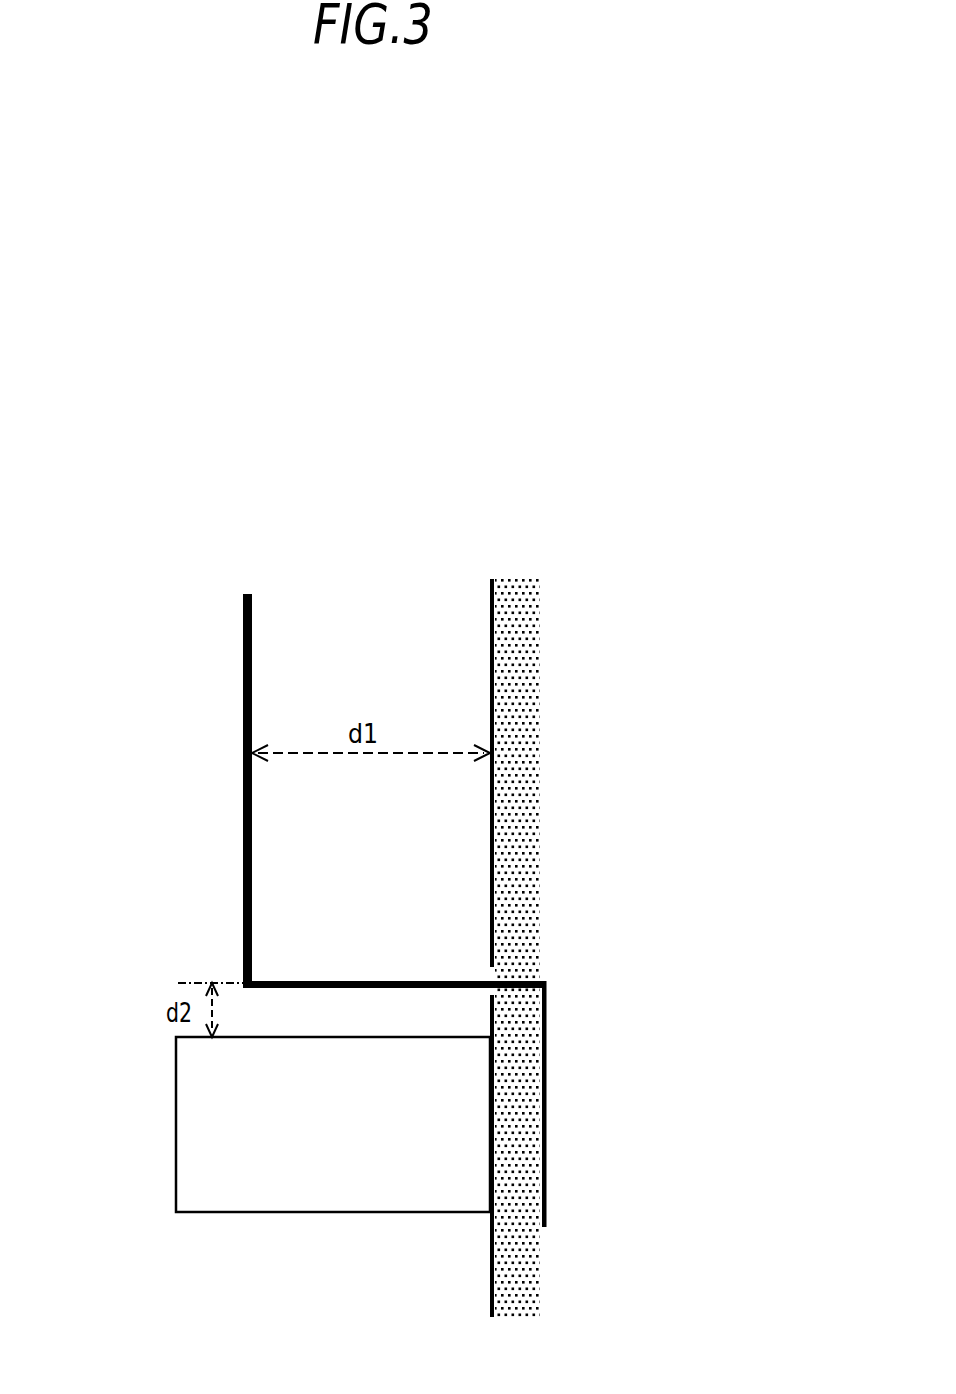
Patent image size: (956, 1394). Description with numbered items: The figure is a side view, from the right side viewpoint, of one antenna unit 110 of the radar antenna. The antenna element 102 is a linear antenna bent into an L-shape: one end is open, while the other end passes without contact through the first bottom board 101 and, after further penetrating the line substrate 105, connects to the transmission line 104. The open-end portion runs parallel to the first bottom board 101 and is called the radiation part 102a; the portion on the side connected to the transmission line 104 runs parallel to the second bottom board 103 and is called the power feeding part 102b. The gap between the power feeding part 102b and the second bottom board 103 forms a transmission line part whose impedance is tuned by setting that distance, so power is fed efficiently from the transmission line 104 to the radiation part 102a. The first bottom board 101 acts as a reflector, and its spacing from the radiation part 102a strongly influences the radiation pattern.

The antenna unit 110 is at (438, 392).
The first bottom board 101 is at (490, 654).
The antenna element 102 is at (216, 682).
The radiation part 102a is at (242, 841).
The power feeding part 102b is at (335, 978).
The second bottom board 103 is at (228, 1038).
The transmission line 104 is at (543, 1113).
The line substrate 105 is at (530, 1273).